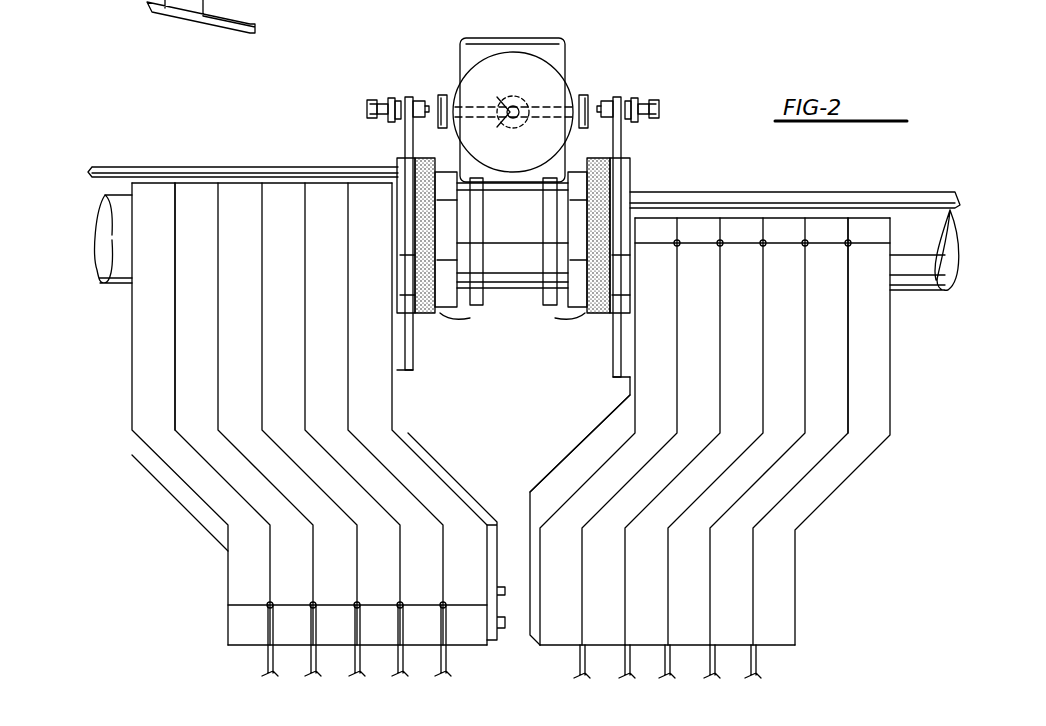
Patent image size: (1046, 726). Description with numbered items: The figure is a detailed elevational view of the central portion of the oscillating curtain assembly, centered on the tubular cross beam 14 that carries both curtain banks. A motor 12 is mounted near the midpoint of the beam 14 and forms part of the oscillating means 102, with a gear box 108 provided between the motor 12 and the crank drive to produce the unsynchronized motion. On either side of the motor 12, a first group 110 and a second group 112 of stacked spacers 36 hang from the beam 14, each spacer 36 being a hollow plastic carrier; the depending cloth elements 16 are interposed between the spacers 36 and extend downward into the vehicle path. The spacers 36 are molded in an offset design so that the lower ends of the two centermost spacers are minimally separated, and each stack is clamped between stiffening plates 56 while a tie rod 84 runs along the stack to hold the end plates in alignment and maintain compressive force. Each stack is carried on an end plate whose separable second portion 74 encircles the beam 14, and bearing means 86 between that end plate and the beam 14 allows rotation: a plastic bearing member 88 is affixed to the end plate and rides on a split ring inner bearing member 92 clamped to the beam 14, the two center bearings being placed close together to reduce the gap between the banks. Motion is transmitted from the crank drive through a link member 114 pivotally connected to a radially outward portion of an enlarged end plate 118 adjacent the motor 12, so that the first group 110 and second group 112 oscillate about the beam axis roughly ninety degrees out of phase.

The motor 12 is at (578, 80).
The tubular cross beam 14 is at (108, 290).
The cloth elements 16 is at (267, 662).
The spacers 36 is at (142, 410).
The stiffening plate 56 is at (550, 468).
The second portion of the end plate 74 is at (410, 367).
The tie rod 84 is at (225, 165).
The bearing means 86 is at (448, 316).
The plastic bearing member 88 is at (598, 305).
The split ring inner bearing member 92 is at (572, 308).
The oscillating means 102 is at (438, 70).
The gear box 108 is at (555, 40).
The first group of stacked spacers 110 is at (190, 540).
The second group of stacked spacers 112 is at (840, 512).
The link member 114 is at (372, 100).
The enlarged end plate 118 is at (395, 125).